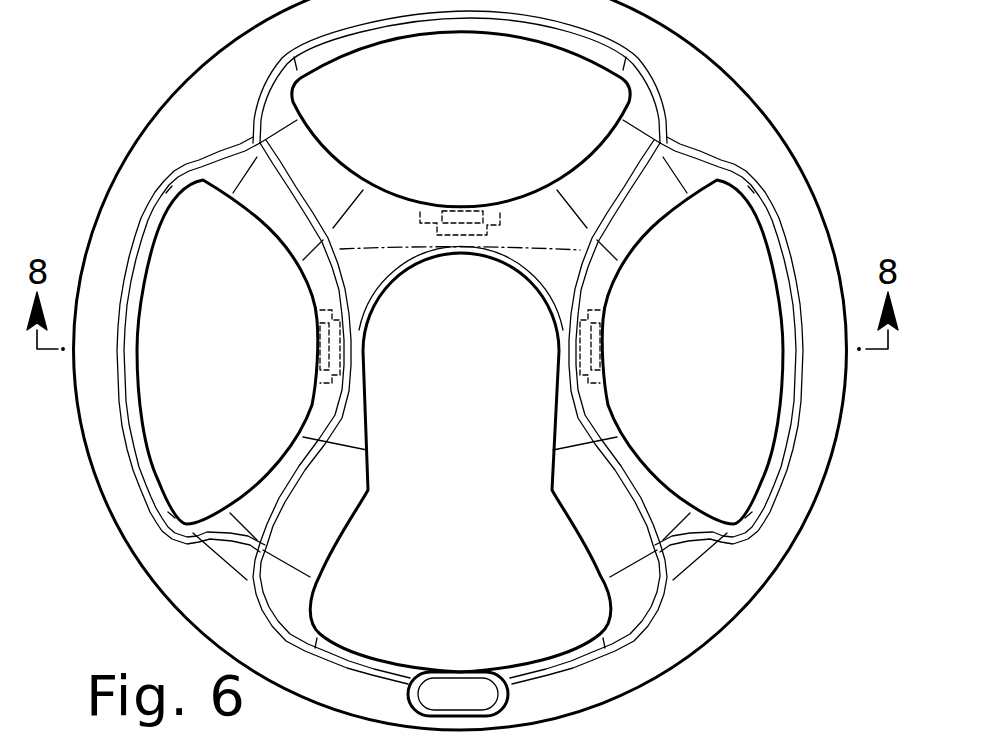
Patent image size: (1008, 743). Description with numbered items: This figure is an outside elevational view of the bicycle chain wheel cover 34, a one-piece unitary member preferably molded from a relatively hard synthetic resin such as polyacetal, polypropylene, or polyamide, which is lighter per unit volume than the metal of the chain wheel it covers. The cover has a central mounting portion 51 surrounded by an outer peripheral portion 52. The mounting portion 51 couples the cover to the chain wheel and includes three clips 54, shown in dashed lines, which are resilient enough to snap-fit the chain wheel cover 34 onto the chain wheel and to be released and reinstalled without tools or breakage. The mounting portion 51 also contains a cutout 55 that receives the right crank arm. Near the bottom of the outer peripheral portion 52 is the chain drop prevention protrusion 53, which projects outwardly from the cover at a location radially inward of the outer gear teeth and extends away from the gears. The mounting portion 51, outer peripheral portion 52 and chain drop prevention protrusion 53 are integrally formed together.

The chain wheel cover 34 is at (742, 60).
The mounting portion 51 is at (590, 420).
The outer peripheral portion 52 is at (707, 592).
The chain drop prevention protrusion 53 is at (460, 688).
The clips 54 is at (462, 228).
The cutout 55 is at (370, 463).